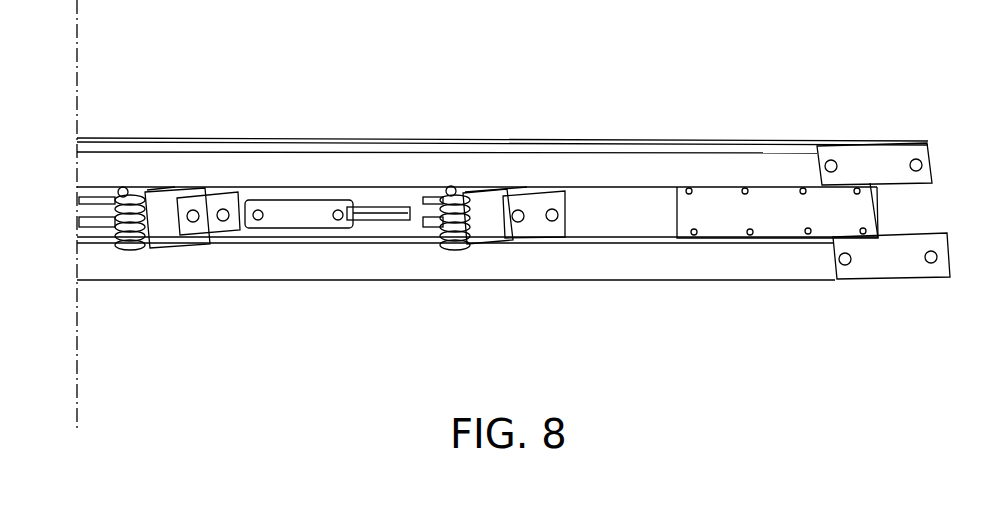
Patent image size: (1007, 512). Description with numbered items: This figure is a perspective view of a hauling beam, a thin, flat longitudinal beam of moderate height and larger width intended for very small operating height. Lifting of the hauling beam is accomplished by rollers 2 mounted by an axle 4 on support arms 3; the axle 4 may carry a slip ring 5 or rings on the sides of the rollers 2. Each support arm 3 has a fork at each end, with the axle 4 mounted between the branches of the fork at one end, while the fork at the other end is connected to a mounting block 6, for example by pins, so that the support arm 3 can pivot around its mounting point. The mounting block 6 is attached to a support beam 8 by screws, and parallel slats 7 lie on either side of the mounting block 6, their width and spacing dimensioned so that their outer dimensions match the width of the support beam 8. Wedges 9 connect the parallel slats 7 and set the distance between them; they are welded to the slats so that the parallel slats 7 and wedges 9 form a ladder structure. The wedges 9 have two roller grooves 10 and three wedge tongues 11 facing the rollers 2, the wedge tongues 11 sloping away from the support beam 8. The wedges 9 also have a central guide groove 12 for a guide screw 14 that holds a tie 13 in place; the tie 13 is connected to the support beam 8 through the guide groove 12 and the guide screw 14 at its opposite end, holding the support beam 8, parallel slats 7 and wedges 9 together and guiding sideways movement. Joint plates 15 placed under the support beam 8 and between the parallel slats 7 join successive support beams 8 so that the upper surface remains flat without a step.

The rollers 2 is at (120, 248).
The support arms 3 is at (483, 247).
The axle 4 is at (450, 187).
The slip ring 5 is at (157, 186).
The mounting block 6 is at (205, 245).
The parallel slats 7 is at (660, 282).
The support beam 8 is at (530, 138).
The wedges 9 is at (383, 237).
The roller grooves 10 is at (437, 248).
The wedge tongues 11 is at (95, 200).
The central guide groove 12 is at (380, 190).
The tie 13 is at (312, 228).
The guide screw 14 is at (252, 187).
The joint plates 15 is at (720, 200).